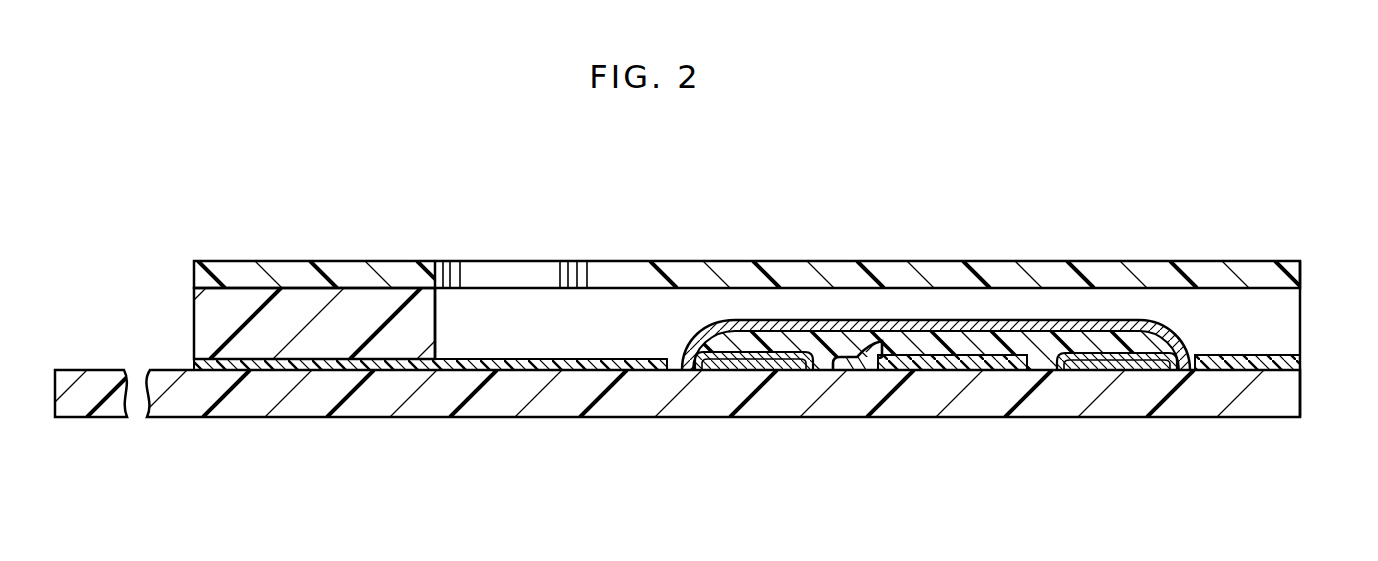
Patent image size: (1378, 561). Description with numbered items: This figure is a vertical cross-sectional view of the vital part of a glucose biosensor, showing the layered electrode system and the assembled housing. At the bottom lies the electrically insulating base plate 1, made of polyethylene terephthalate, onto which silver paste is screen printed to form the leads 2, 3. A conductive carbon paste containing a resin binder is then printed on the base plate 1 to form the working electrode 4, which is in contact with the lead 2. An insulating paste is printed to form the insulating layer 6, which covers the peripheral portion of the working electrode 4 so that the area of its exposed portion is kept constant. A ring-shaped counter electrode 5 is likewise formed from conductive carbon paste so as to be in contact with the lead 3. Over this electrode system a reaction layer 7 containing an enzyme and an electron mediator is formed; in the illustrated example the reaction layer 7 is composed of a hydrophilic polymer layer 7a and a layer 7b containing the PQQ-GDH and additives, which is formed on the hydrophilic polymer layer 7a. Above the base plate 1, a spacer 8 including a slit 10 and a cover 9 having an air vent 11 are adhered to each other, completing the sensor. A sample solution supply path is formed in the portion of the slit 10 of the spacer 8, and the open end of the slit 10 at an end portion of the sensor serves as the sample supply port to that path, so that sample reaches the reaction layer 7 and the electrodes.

The electrically insulating base plate 1 is at (352, 408).
The lead 2 is at (940, 378).
The lead 3 is at (737, 368).
The working electrode 4 is at (908, 345).
The counter electrode 5 is at (750, 340).
The insulating layer 6 is at (600, 357).
The reaction layer 7 is at (707, 330).
The hydrophilic polymer layer 7a is at (1048, 332).
The layer containing PQQ-GDH and additives 7b is at (1022, 330).
The spacer 8 is at (207, 335).
The cover 9 is at (298, 272).
The slit 10 is at (1276, 330).
The air vent 11 is at (513, 270).